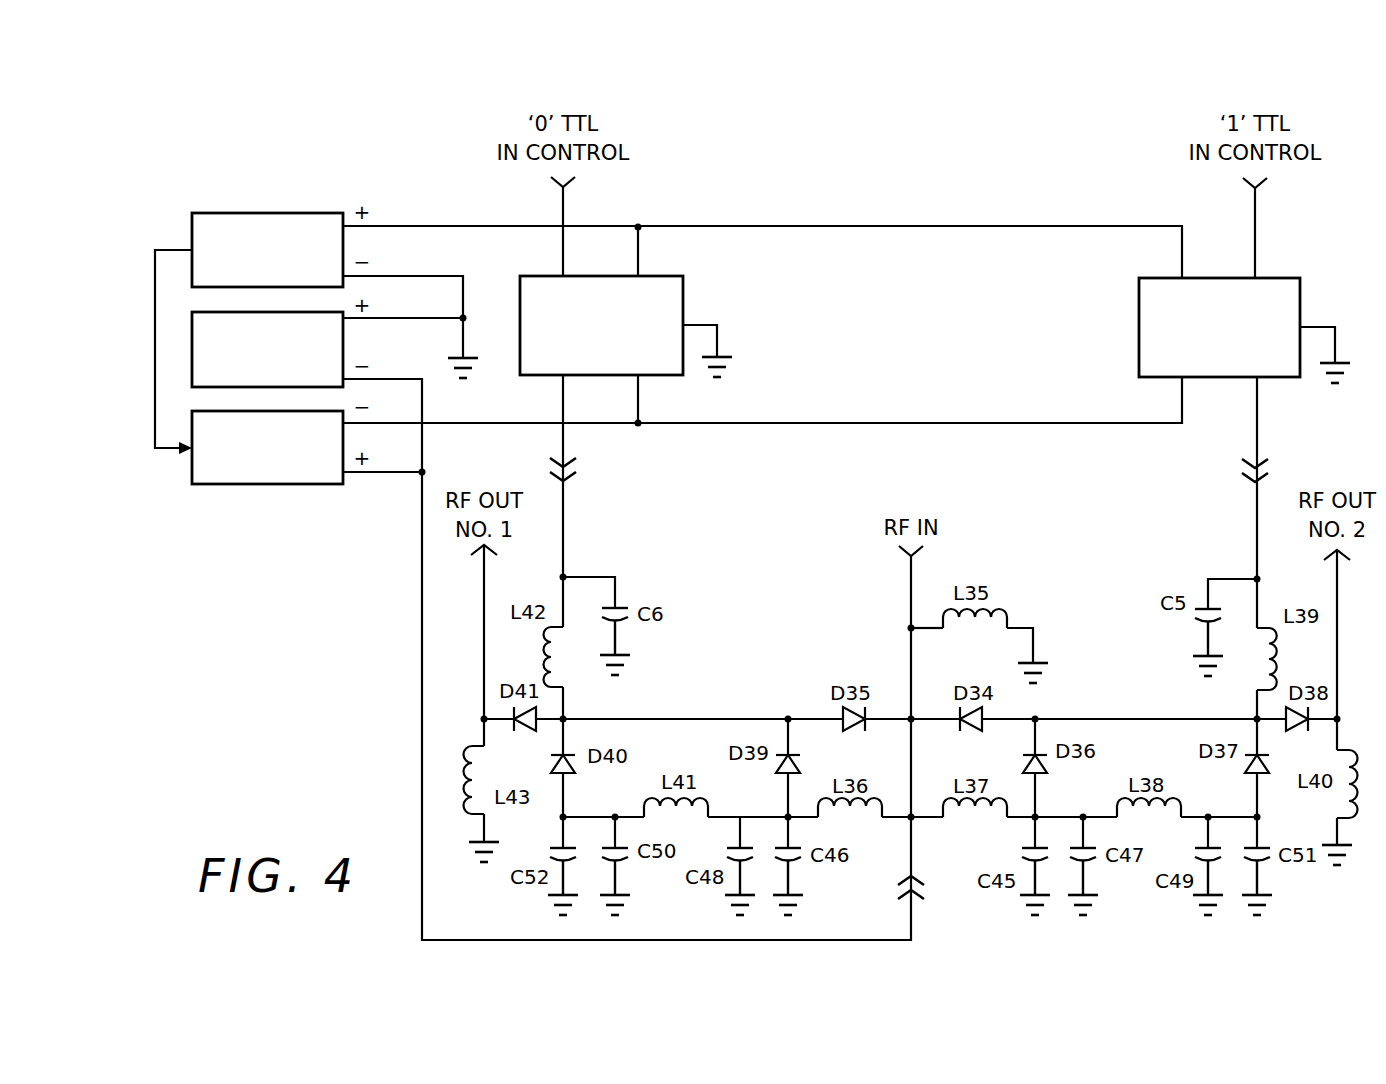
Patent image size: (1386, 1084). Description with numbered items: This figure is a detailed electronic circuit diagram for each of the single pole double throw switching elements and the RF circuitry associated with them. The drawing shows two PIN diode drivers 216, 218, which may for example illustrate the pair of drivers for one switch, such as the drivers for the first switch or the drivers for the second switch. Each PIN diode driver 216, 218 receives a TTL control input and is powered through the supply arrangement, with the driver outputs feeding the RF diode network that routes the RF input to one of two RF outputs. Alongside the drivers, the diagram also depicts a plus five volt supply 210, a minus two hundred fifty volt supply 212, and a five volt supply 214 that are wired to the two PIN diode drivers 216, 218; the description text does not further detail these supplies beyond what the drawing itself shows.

The +5 volt supply 210 is at (242, 216).
The -250 volt supply 212 is at (338, 353).
The 5 volt supply 214 is at (242, 484).
The PIN diode driver 216 is at (680, 296).
The PIN diode driver 218 is at (1143, 297).